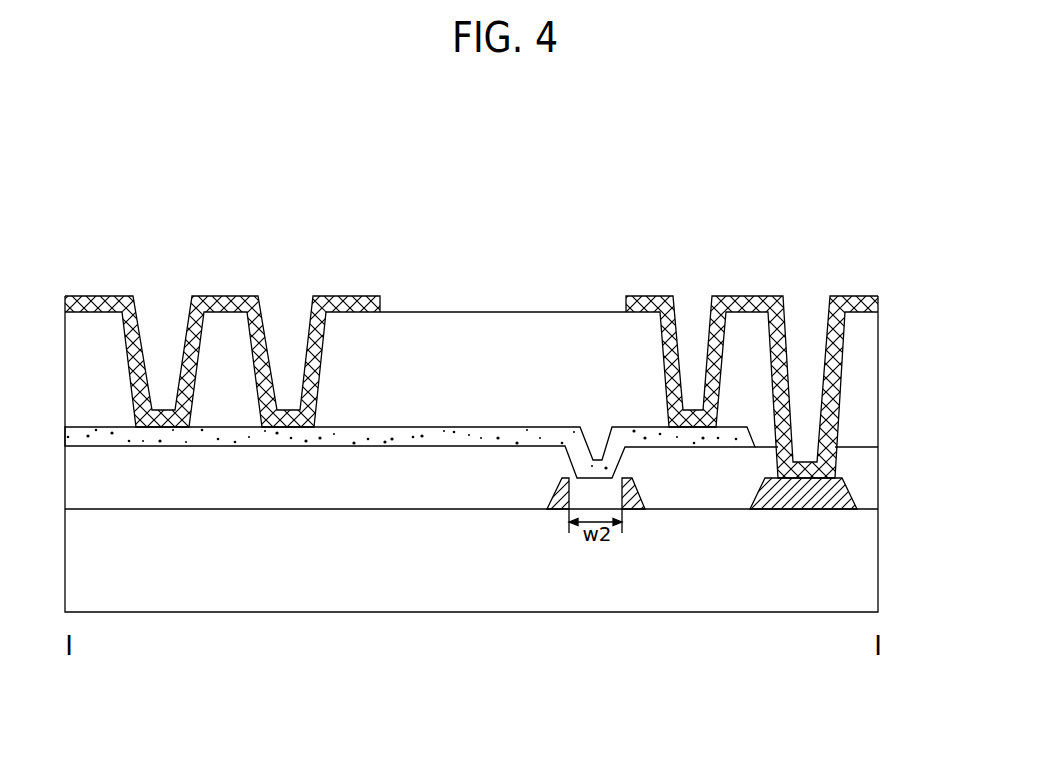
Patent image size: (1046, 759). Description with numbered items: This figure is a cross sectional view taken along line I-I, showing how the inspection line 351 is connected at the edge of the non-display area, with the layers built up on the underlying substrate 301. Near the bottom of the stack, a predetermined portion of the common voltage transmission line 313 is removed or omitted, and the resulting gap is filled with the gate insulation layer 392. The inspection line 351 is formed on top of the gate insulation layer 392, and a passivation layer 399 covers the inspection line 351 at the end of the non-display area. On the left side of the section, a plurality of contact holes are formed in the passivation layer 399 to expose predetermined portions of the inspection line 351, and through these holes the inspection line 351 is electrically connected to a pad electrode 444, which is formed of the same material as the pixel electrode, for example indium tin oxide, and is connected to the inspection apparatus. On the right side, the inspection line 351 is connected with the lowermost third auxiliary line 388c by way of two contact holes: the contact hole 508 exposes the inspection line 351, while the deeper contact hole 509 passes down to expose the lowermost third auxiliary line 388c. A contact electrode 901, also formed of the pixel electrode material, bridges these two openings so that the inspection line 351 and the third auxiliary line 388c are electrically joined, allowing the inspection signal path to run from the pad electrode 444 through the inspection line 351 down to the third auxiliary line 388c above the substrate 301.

The substrate 301 is at (868, 545).
The common voltage transmission line 313 is at (632, 510).
The inspection line 351 is at (452, 432).
The third auxiliary line 388c is at (802, 503).
The gate insulation layer 392 is at (868, 475).
The passivation layer 399 is at (868, 392).
The pad electrode 444 is at (90, 297).
The contact hole 508 is at (695, 313).
The contact hole 509 is at (807, 313).
The contact electrode 901 is at (648, 297).